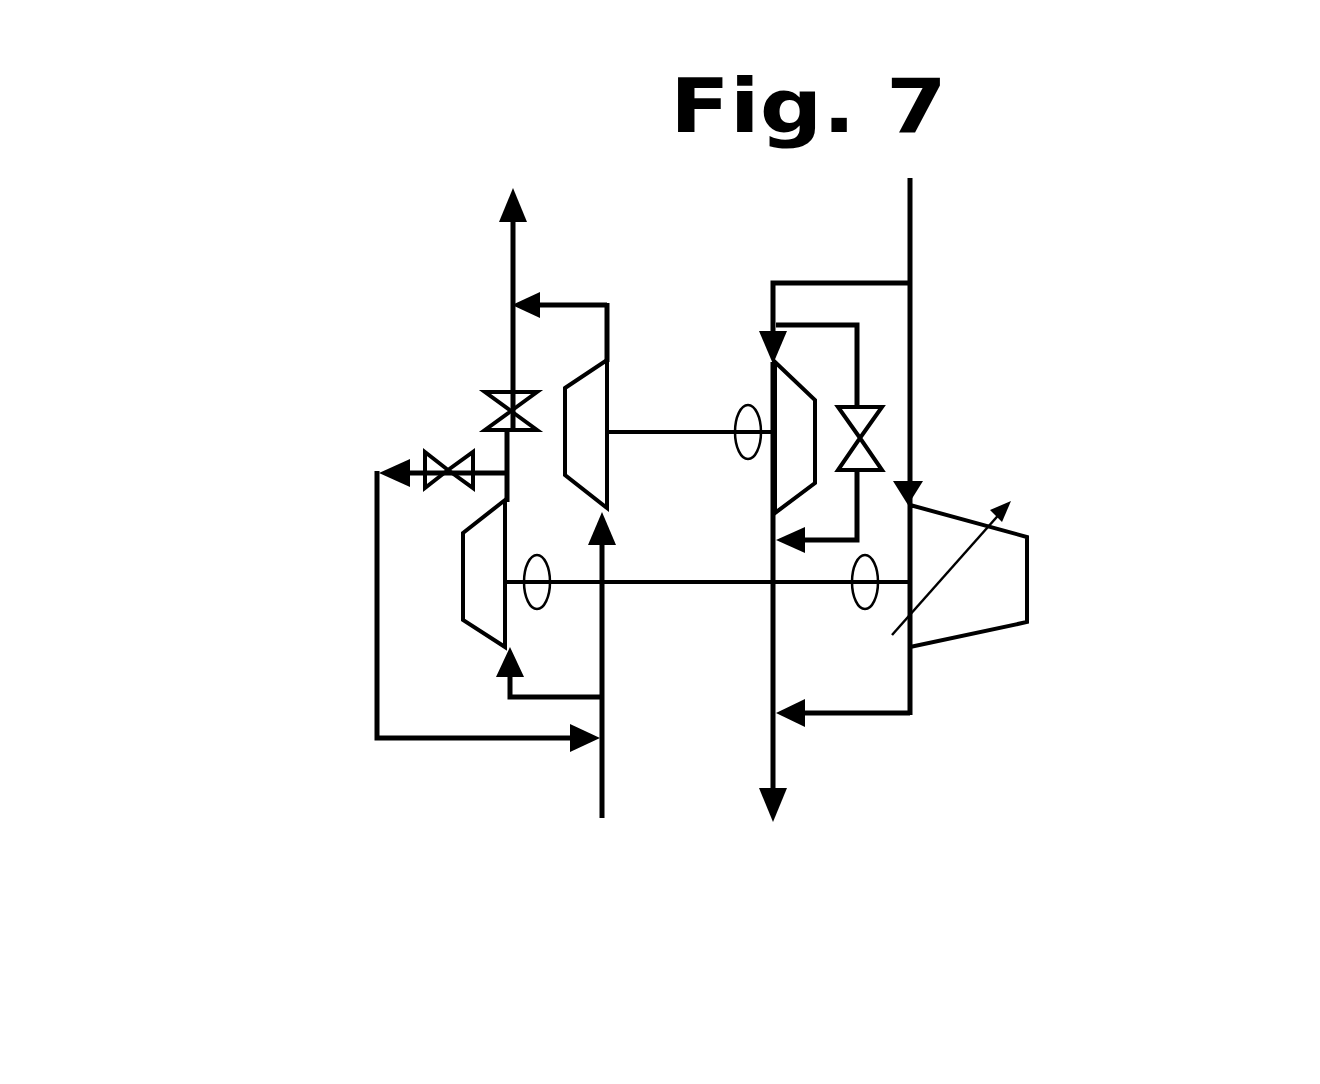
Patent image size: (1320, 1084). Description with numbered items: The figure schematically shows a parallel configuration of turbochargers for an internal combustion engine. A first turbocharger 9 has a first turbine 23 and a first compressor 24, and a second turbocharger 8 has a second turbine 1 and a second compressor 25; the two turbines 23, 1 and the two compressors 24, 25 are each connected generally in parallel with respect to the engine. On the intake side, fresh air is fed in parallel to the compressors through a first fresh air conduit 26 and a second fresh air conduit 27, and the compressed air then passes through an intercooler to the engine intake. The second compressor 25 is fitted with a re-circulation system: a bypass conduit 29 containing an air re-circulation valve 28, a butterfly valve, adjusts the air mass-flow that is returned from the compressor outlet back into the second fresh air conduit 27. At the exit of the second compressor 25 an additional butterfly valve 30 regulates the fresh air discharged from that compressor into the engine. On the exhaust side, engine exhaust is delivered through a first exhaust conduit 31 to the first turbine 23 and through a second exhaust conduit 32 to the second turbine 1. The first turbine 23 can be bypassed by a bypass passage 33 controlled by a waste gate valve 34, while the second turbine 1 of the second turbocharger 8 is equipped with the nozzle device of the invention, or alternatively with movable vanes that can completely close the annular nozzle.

The second turbine 1 is at (960, 620).
The second turbocharger 8 is at (707, 570).
The first turbocharger 9 is at (691, 422).
The first turbine 23 is at (792, 407).
The first compressor 24 is at (590, 412).
The second compressor 25 is at (487, 597).
The first fresh air conduit 26 is at (597, 787).
The second fresh air conduit 27 is at (535, 700).
The air re-circulation valve 28 is at (440, 462).
The bypass conduit 29 is at (377, 668).
The butterfly valve 30 is at (505, 398).
The first exhaust conduit 31 is at (842, 282).
The second exhaust conduit 32 is at (905, 322).
The bypass passage 33 is at (857, 382).
The waste gate valve 34 is at (893, 457).